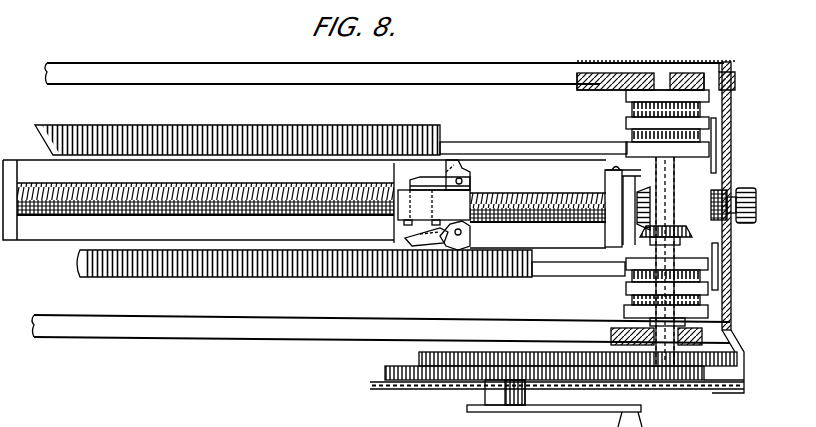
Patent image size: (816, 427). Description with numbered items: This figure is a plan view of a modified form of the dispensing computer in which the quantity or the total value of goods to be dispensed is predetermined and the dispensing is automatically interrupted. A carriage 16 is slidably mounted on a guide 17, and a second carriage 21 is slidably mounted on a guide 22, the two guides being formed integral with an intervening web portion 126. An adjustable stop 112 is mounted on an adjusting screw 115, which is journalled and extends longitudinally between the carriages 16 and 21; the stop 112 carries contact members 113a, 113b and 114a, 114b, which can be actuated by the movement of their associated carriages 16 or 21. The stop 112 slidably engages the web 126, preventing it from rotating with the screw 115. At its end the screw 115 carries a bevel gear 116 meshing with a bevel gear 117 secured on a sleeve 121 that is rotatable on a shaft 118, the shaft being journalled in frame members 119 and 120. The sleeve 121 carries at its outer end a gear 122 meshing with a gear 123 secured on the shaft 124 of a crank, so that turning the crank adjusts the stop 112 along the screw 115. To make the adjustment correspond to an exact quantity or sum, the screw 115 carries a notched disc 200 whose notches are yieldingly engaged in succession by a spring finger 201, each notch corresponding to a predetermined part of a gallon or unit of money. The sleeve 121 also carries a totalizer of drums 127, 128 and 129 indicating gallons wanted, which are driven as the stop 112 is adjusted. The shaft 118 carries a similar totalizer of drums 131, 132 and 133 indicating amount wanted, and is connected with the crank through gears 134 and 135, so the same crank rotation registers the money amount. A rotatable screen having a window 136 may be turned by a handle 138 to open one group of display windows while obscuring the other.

The carriage 16 is at (238, 278).
The guide 17 is at (545, 280).
The second carriage 21 is at (262, 118).
The guide 22 is at (516, 145).
The adjustable stop 112 is at (400, 176).
The contact member 113a is at (470, 166).
The contact member 113b is at (448, 180).
The contact member 114a is at (470, 282).
The contact member 114b is at (428, 281).
The adjusting screw 115 is at (236, 194).
The bevel gear 116 is at (648, 202).
The bevel gear 117 is at (690, 236).
The shaft 118 is at (668, 208).
The frame member 119 is at (285, 334).
The frame member 120 is at (362, 76).
The sleeve 121 is at (656, 246).
The gear 122 is at (734, 350).
The gear 123 is at (418, 358).
The shaft 124 is at (470, 402).
The web portion 126 is at (556, 152).
The drum 127 is at (706, 270).
The drum 128 is at (630, 283).
The drum 129 is at (706, 304).
The drum 131 is at (718, 62).
The drum 132 is at (713, 118).
The drum 133 is at (632, 142).
The gear 134 is at (718, 386).
The gear 135 is at (385, 372).
The window 136 is at (722, 109).
The handle 138 is at (745, 189).
The notched disc 200 is at (630, 212).
The spring finger 201 is at (620, 166).